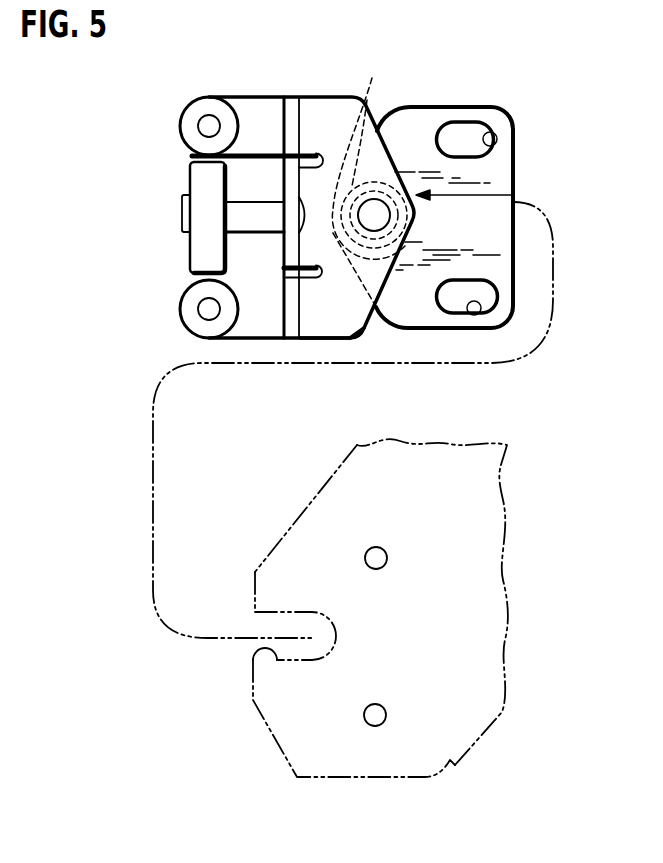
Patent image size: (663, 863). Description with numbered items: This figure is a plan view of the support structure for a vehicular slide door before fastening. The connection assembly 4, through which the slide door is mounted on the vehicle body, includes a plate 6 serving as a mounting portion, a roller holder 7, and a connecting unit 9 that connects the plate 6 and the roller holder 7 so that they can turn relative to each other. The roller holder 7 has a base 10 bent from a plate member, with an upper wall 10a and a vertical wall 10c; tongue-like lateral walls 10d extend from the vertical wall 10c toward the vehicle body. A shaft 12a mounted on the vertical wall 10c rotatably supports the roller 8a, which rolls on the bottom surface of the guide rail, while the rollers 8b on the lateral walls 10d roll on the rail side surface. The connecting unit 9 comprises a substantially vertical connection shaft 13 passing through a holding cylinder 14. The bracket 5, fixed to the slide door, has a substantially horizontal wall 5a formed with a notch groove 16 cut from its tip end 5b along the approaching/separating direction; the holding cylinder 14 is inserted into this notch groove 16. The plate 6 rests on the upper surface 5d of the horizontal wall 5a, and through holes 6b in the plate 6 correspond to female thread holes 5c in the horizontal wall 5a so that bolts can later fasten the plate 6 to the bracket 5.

The connection assembly 4 is at (471, 207).
The bracket 5 is at (382, 517).
The horizontal wall 5a is at (497, 585).
The tip end 5b is at (255, 583).
The female thread holes 5c is at (376, 547).
The upper surface 5d is at (385, 762).
The plate 6 is at (502, 180).
The through holes 6b is at (496, 136).
The roller holder 7 is at (363, 353).
The roller 8a is at (189, 250).
The rollers 8b is at (182, 125).
The connecting unit 9 is at (379, 153).
The base 10 is at (297, 222).
The upper wall 10a is at (320, 340).
The vertical wall 10c is at (275, 248).
The lateral walls 10d is at (237, 97).
The shaft 12a is at (252, 210).
The connection shaft 13 is at (377, 210).
The holding cylinder 14 is at (427, 46).
The notch groove 16 is at (250, 654).